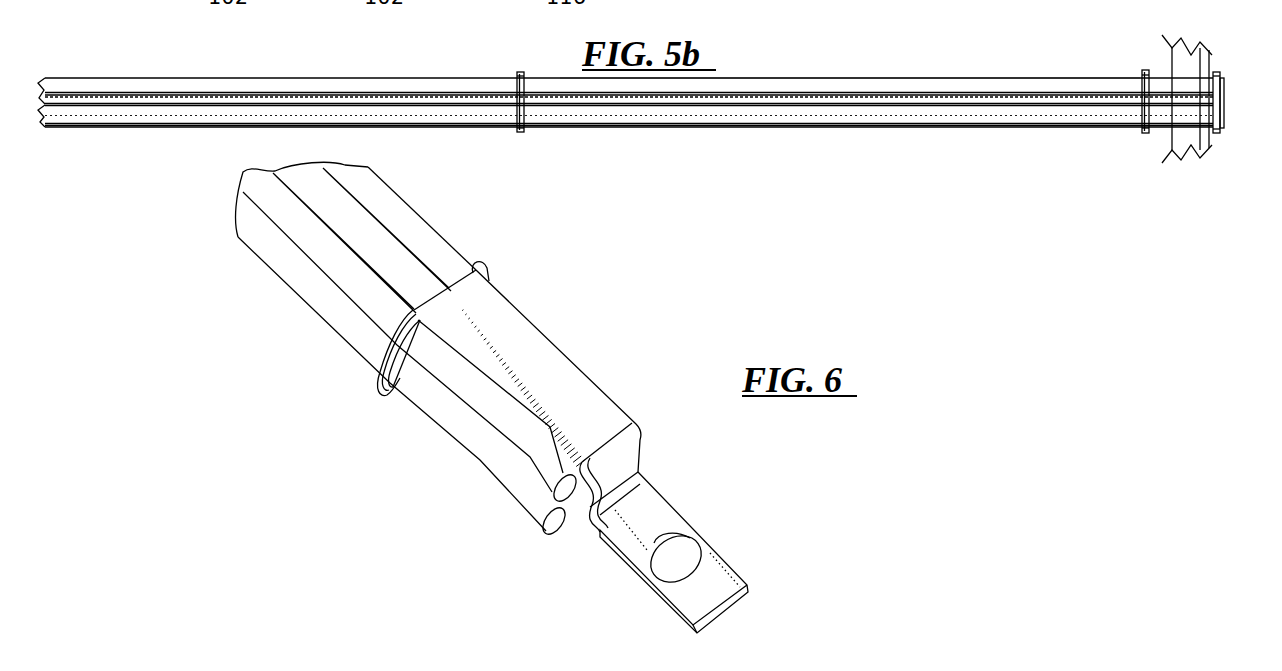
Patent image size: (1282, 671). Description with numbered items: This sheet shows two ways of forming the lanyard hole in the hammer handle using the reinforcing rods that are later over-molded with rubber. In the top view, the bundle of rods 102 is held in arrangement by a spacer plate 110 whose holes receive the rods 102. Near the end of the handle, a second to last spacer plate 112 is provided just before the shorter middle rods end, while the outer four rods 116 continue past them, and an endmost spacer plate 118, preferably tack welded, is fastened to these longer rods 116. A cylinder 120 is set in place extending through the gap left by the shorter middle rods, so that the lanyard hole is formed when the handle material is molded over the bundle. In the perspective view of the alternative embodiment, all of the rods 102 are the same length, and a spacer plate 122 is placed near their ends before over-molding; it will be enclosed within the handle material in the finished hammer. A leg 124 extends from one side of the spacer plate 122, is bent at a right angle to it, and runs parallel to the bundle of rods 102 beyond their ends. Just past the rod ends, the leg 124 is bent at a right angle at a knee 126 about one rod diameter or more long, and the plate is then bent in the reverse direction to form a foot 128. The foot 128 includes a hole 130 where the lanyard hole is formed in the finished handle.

In FIG. 5B, the rods 102 is at (247, 86).
In FIG. 6, the rods 102 is at (418, 226).
In FIG. 5B, the spacer plate 110 is at (518, 108).
In FIG. 5B, the second to last spacer plate 112 is at (1143, 82).
In FIG. 5B, the outer four rods 116 is at (863, 86).
In FIG. 5B, the endmost spacer plate 118 is at (1226, 116).
In FIG. 5B, the cylinder 120 is at (1185, 67).
In FIG. 6, the spacer plate 122 is at (373, 382).
In FIG. 6, the leg 124 is at (533, 360).
In FIG. 6, the knee 126 is at (636, 443).
In FIG. 6, the foot 128 is at (744, 568).
In FIG. 6, the hole 130 is at (680, 556).